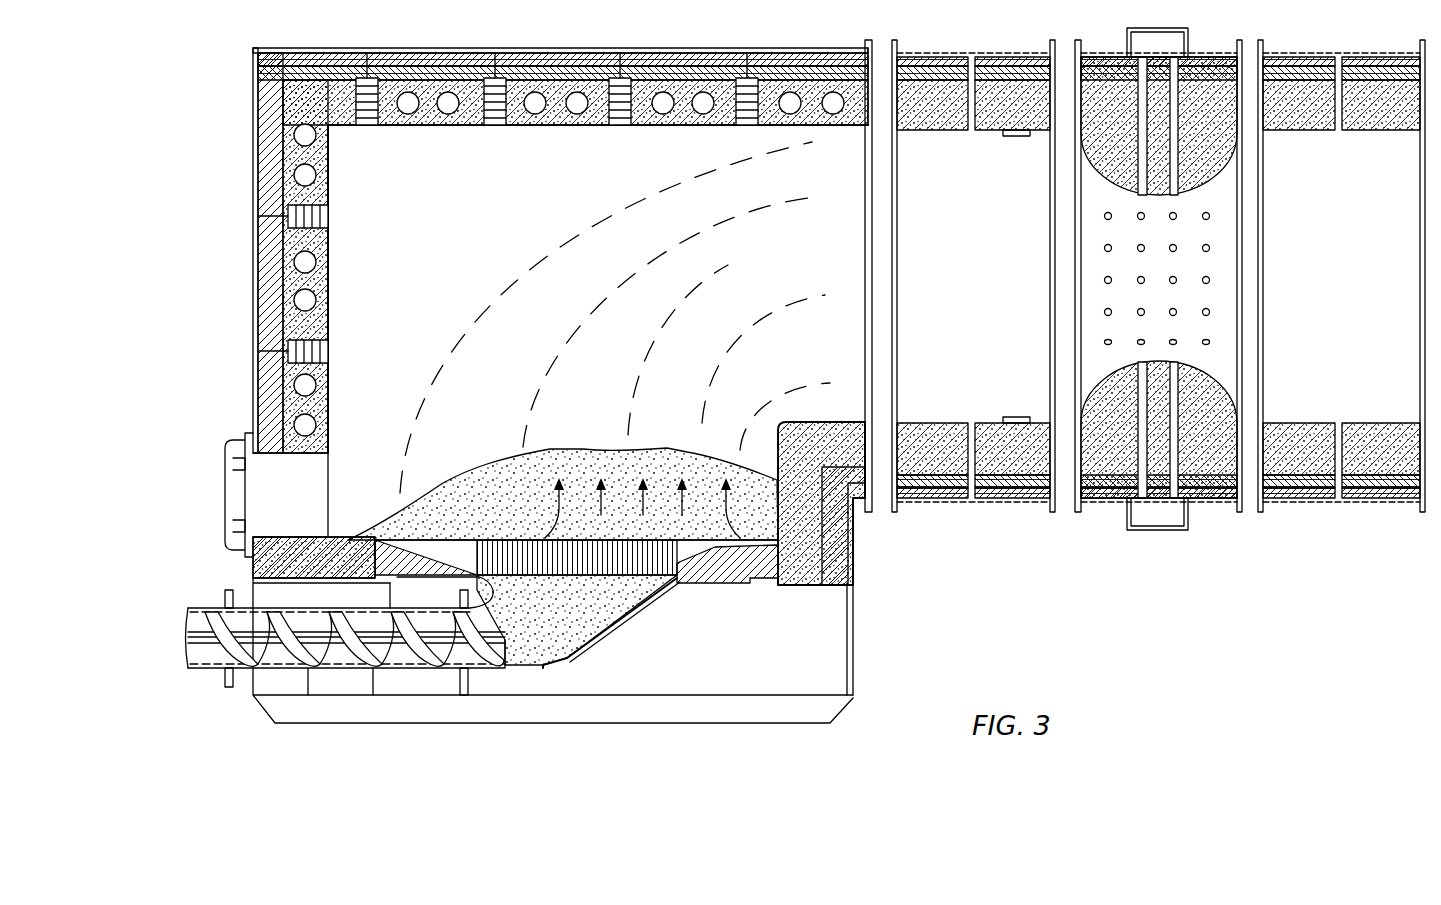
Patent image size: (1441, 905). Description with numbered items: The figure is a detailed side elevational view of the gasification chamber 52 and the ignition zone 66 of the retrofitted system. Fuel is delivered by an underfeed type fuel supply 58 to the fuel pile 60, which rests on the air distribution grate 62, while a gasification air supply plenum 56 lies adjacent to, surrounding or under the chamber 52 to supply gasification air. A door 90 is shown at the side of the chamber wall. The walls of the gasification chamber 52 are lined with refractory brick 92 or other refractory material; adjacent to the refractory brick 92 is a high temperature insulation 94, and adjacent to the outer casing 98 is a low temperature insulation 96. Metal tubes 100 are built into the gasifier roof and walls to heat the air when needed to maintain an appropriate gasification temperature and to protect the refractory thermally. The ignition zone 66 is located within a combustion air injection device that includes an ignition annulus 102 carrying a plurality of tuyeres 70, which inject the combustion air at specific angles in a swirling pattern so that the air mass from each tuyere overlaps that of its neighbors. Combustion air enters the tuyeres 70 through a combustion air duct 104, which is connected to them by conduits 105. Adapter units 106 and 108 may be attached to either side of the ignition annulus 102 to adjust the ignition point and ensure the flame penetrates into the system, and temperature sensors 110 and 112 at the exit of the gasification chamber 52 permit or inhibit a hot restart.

The gasification chamber 52 is at (460, 249).
The gasification air supply plenum 56 is at (708, 668).
The underfeed type fuel supply 58 is at (185, 622).
The fuel pile 60 is at (500, 475).
The air distribution grate 62 is at (652, 565).
The ignition zone 66 is at (1075, 266).
The tuyeres 70 is at (1210, 312).
The access door 90 is at (222, 497).
The refractory brick 92 is at (680, 95).
The high temperature insulation 94 is at (275, 243).
The low temperature insulation 96 is at (260, 308).
The outer casing 98 is at (256, 352).
The metal tubes 100 is at (448, 128).
The ignition annulus 102 is at (1228, 197).
The combustion air duct 104 is at (1186, 42).
The conduits 105 is at (1178, 382).
The adapter unit 106 is at (963, 505).
The adapter unit 108 is at (1322, 512).
The temperature sensor 110 is at (1015, 137).
The temperature sensor 112 is at (1012, 418).